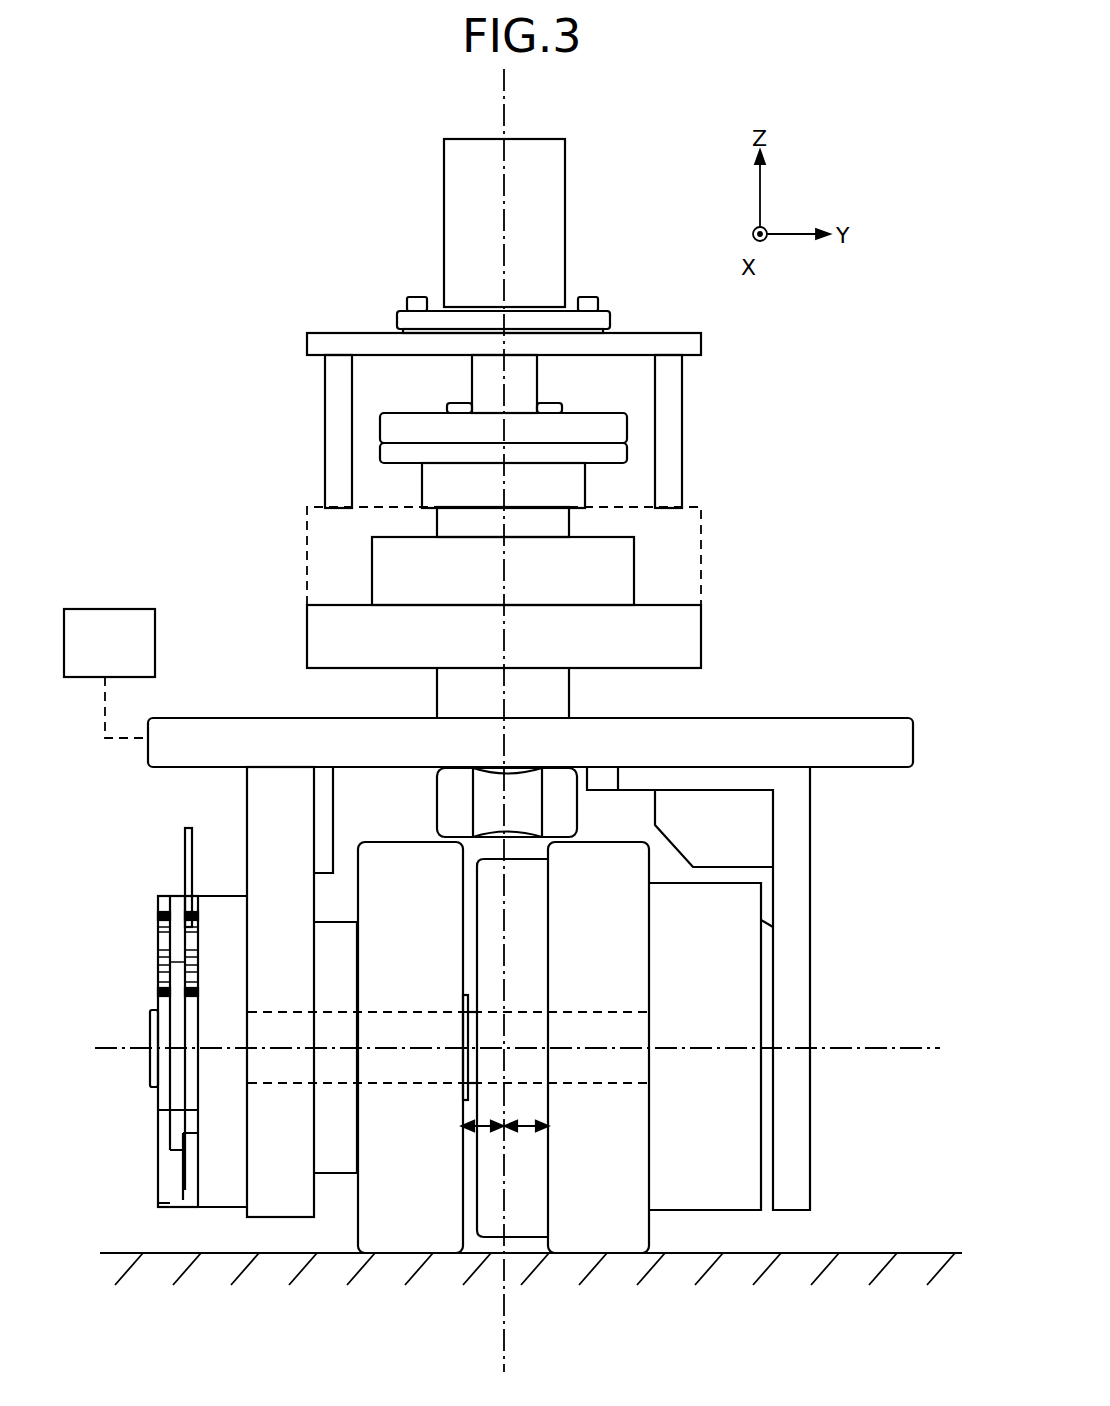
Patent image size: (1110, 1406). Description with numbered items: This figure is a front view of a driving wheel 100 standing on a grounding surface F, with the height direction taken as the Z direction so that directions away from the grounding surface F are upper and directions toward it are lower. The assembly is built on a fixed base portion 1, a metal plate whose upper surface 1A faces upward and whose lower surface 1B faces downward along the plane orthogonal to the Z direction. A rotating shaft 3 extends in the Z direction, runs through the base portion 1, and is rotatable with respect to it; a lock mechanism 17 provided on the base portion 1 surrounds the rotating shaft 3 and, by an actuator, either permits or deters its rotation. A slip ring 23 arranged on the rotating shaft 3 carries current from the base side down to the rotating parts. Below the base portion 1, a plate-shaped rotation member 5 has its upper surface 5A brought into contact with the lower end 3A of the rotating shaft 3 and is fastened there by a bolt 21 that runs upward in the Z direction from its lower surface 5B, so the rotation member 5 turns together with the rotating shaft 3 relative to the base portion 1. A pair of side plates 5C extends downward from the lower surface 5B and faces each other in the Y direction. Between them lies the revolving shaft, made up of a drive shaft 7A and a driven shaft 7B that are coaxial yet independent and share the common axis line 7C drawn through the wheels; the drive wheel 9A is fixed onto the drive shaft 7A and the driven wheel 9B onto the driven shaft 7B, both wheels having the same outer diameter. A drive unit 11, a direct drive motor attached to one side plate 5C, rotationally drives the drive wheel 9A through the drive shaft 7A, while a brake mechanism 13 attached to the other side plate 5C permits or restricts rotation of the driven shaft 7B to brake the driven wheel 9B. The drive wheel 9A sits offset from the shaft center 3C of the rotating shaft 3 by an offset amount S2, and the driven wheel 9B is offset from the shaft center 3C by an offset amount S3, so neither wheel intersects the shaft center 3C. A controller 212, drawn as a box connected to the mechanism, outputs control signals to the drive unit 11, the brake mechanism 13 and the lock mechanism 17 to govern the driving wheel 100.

The driving wheel 100 is at (233, 232).
The base portion 1 is at (701, 542).
The upper surface 1A is at (523, 323).
The lower surface 1B is at (514, 587).
The rotating shaft 3 is at (560, 689).
The lower end 3A is at (472, 720).
The shaft center 3C is at (504, 1362).
The rotation member 5 is at (901, 734).
The upper surface 5A is at (863, 718).
The lower surface 5B is at (887, 770).
The side plates 5C is at (247, 806).
The drive shaft 7A is at (727, 1096).
The driven shaft 7B is at (275, 1089).
The roller rotation axis 7C is at (921, 1049).
The drive wheel 9A is at (627, 1235).
The driven wheel 9B is at (412, 1233).
The drive unit 11 is at (735, 1200).
The brake mechanism 13 is at (215, 1195).
The lock mechanism 17 is at (318, 642).
The bolt 21 is at (437, 800).
The slip ring 23 is at (383, 425).
The controller 212 is at (118, 609).
The grounding surface F is at (897, 1252).
The offset amount S2 is at (525, 1130).
The offset amount S3 is at (485, 1128).